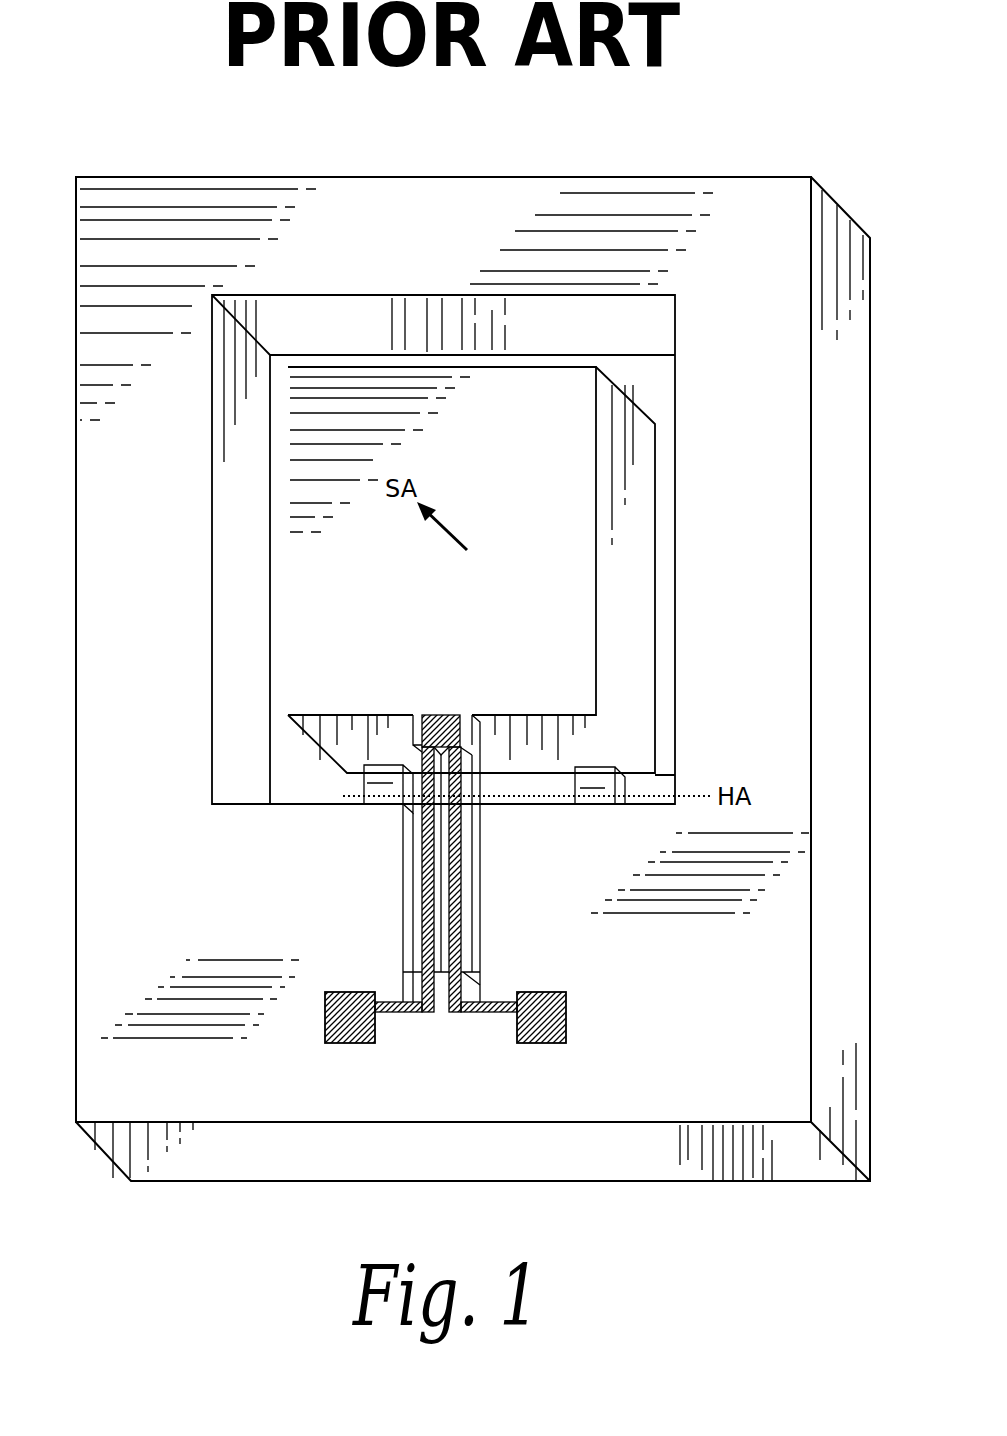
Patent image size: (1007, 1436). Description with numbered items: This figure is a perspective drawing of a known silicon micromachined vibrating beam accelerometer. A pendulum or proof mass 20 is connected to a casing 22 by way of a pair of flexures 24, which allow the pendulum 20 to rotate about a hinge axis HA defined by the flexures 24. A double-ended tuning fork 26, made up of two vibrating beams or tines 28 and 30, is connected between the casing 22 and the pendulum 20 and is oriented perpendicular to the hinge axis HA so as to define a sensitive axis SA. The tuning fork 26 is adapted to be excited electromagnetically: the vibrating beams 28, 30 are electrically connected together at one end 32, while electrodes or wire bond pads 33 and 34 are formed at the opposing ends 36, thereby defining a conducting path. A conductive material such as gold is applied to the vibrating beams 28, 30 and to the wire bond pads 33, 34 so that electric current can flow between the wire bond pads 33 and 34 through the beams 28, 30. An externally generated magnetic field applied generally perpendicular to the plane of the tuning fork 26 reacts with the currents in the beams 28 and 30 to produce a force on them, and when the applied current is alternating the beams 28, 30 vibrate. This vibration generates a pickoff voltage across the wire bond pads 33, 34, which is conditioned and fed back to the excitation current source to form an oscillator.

The pendulum 20 is at (553, 512).
The casing 22 is at (717, 203).
The flexures 24 is at (383, 787).
The double-ended tuning fork 26 is at (560, 920).
The vibrating beam 28 is at (460, 817).
The vibrating beam 30 is at (420, 947).
The end 32 is at (459, 672).
The wire bond pad 33 is at (323, 1025).
The wire bond pad 34 is at (556, 1022).
The opposing ends 36 is at (442, 1038).